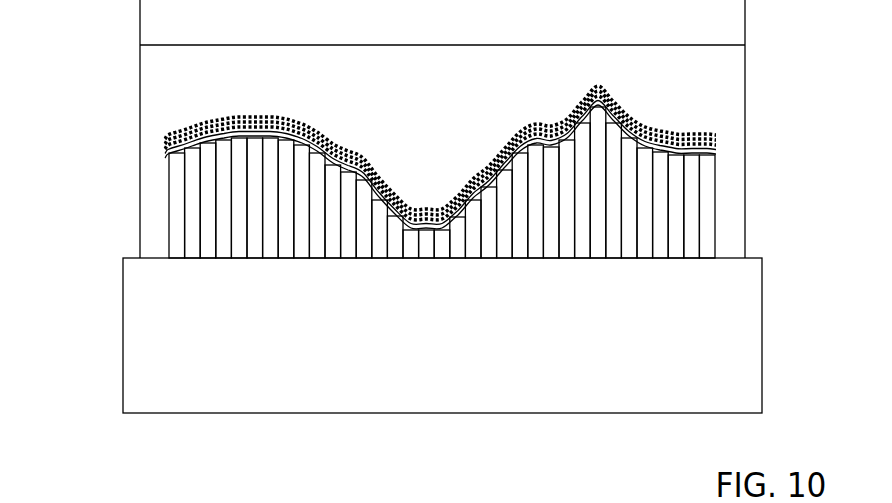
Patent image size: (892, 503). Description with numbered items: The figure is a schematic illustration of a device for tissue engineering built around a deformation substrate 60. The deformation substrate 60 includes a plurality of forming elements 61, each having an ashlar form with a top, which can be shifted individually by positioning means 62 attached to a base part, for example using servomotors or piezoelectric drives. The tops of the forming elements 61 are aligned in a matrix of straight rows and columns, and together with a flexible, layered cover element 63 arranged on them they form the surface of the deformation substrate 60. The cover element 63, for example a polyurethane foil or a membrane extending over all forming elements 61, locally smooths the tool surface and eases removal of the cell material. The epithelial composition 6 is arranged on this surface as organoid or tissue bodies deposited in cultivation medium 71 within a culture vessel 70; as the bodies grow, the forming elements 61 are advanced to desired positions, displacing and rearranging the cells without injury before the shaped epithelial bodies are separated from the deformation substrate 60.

The epithelial composition 6 is at (670, 124).
The deformation substrate 60 is at (165, 195).
The forming element 61 is at (175, 225).
The positioning means 62 is at (123, 385).
The layered cover element 63 is at (672, 147).
The culture vessel 70 is at (140, 105).
The cultivation medium 71 is at (340, 45).